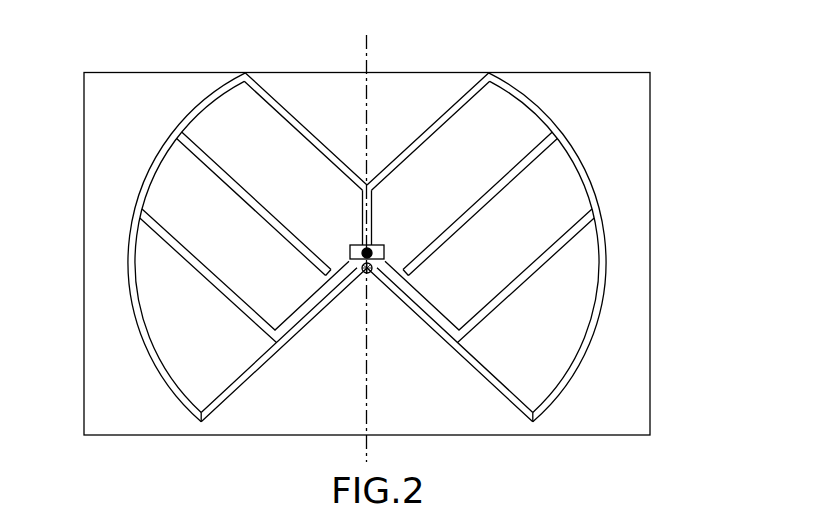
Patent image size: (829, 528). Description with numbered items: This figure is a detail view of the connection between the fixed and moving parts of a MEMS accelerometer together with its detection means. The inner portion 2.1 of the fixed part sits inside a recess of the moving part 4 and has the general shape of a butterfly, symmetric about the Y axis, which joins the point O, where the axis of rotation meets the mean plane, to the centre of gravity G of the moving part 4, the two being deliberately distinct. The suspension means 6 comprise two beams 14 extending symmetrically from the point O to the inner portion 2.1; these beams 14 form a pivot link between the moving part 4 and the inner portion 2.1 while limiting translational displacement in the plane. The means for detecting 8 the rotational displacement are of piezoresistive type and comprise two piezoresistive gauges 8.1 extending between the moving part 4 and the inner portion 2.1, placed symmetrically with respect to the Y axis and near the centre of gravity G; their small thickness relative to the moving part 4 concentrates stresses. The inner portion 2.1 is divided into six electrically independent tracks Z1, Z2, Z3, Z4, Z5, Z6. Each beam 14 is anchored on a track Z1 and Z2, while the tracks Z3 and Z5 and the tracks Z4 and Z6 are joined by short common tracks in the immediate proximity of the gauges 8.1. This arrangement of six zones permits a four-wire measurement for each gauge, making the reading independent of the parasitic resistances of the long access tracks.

The inner portion 2.1 is at (546, 121).
The moving part 4 is at (640, 270).
The suspension means 6 is at (323, 345).
The means for detecting 8 is at (394, 258).
The piezoresistive gauges 8.1 is at (352, 262).
The beams 14 is at (417, 288).
The centre of gravity G is at (350, 247).
The intersection point O is at (368, 273).
The Y axis Y is at (366, 86).
The track Z1 is at (193, 383).
The track Z2 is at (541, 383).
The track Z3 is at (160, 203).
The track Z4 is at (568, 202).
The track Z5 is at (227, 118).
The track Z6 is at (513, 120).